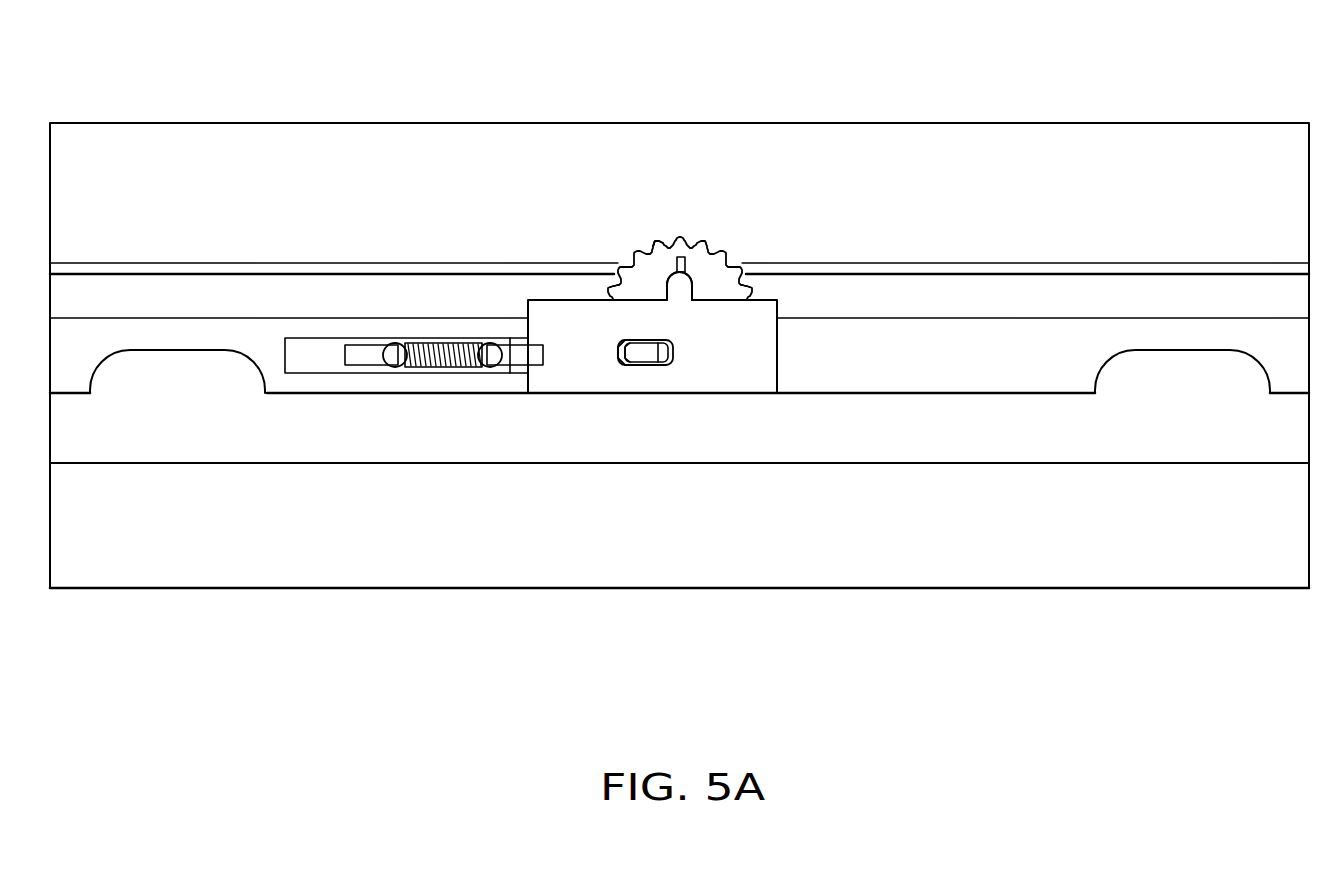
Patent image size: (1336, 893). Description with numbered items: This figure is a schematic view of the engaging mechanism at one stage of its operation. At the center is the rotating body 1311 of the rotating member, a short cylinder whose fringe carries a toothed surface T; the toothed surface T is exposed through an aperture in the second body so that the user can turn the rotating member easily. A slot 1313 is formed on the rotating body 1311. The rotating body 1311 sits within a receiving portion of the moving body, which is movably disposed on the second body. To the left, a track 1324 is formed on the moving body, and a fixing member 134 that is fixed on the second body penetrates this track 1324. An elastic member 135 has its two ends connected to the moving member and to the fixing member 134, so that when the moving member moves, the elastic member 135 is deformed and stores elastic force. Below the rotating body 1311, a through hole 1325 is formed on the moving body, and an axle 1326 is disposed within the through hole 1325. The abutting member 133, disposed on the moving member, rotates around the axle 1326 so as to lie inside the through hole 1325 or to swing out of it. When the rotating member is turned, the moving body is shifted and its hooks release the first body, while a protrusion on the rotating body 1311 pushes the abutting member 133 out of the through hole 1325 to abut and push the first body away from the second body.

The track 1324 is at (297, 358).
The fixing member 134 is at (370, 357).
The elastic member 135 is at (452, 357).
The toothed surface T is at (647, 248).
The slot 1313 is at (680, 257).
The rotating body 1311 is at (708, 290).
The through hole 1325 is at (623, 365).
The axle 1326 is at (631, 365).
The abutting member 133 is at (652, 355).